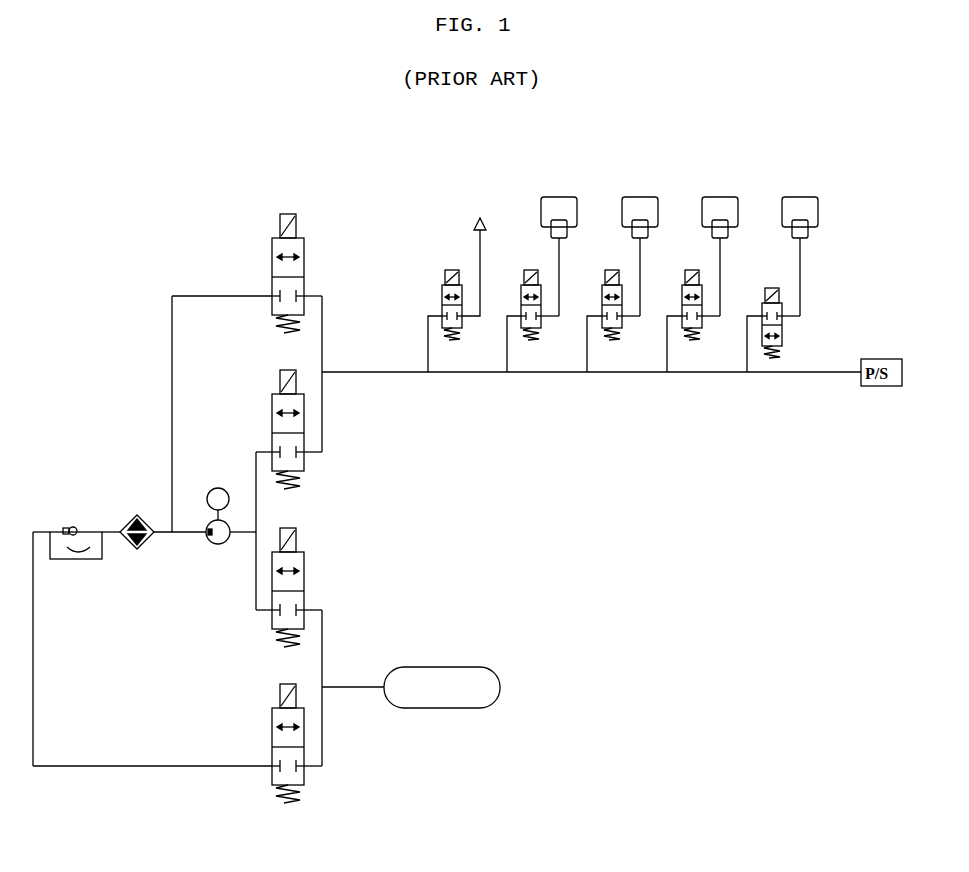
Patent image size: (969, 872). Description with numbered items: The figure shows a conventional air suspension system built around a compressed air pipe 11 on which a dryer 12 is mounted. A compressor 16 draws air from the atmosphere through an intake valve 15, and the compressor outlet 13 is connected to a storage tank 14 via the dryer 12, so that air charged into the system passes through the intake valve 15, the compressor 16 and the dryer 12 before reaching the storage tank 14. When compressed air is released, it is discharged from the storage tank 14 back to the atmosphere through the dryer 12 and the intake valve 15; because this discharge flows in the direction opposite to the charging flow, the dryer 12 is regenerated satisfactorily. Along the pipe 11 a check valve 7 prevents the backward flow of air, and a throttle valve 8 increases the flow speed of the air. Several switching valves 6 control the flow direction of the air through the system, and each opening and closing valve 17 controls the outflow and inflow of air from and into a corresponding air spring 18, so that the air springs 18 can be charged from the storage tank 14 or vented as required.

The switching valve 6 is at (272, 252).
The check valve 7 is at (70, 526).
The throttle valve 8 is at (82, 564).
The compressed air pipe 11 is at (102, 768).
The dryer 12 is at (135, 513).
The compressor outlet 13 is at (205, 536).
The storage tank 14 is at (445, 710).
The intake valve 15 is at (442, 292).
The compressor 16 is at (212, 546).
The opening and closing valve 17 is at (521, 295).
The air spring 18 is at (549, 197).